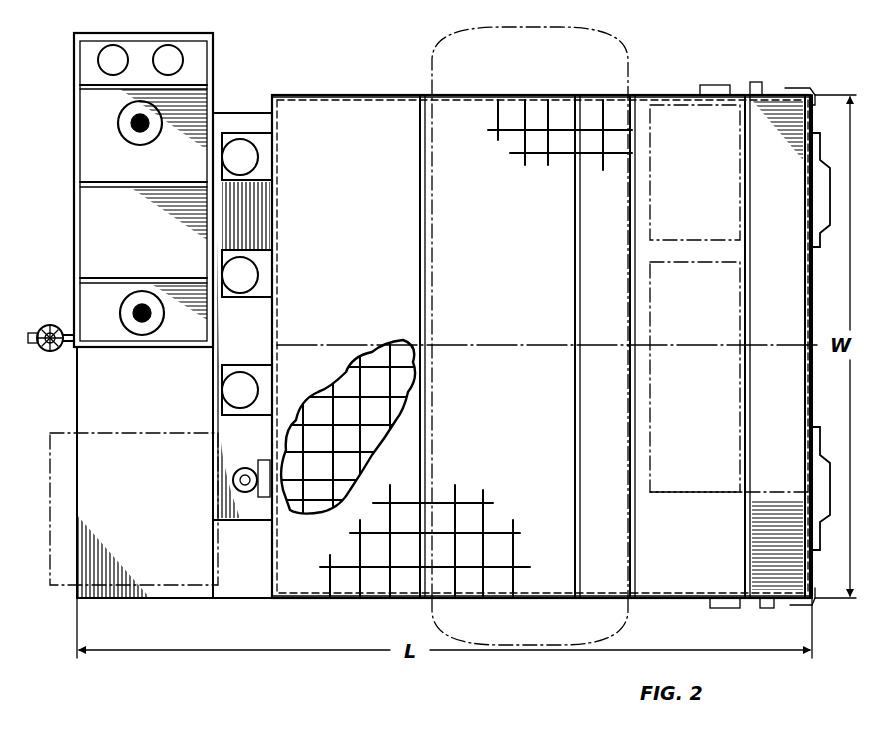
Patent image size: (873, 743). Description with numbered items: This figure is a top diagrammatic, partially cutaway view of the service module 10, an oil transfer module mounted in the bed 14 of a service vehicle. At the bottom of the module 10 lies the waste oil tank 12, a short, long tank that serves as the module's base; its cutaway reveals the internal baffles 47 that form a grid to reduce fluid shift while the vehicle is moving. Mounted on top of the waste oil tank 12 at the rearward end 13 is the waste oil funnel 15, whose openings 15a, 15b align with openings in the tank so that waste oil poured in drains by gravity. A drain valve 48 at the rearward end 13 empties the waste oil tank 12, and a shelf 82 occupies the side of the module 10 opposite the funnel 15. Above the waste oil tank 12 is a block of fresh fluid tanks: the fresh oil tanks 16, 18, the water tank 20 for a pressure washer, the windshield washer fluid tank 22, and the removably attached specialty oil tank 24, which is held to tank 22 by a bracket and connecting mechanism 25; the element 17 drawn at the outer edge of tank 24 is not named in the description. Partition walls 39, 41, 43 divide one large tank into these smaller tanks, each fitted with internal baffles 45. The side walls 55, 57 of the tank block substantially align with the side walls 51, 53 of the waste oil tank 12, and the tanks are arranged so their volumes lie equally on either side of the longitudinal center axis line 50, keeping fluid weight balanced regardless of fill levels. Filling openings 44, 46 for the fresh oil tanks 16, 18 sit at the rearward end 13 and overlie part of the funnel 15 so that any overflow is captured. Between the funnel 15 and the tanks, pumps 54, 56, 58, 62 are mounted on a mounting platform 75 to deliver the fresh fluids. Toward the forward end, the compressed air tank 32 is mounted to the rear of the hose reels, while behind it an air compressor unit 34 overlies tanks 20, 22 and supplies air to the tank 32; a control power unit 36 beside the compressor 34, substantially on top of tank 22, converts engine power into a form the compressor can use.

The service module 10 is at (350, 56).
The waste oil tank 12 is at (406, 406).
The rearward end 13 is at (74, 601).
The bed 14 is at (688, 628).
The waste oil funnel 15 is at (118, 349).
The opening 15a is at (142, 322).
The opening 15b is at (140, 132).
The fresh oil tank 16 is at (348, 270).
The door 17 is at (812, 92).
The fresh oil tank 18 is at (506, 278).
The water tank 20 is at (606, 278).
The windshield washer fluid tank 22 is at (686, 320).
The removably attached tank 24 is at (780, 320).
The bracket and connecting mechanism 25 is at (788, 88).
The compressed air tank 32 is at (553, 28).
The air compressor unit 34 is at (656, 432).
The control power unit 36 is at (652, 180).
The partition wall 39 is at (425, 446).
The partition wall 41 is at (580, 500).
The partition wall 43 is at (653, 494).
The opening 44 is at (113, 47).
The internal baffles 45 is at (525, 160).
The opening 46 is at (168, 47).
The internal baffles 47 is at (385, 370).
The drain valve 48 is at (48, 352).
The longitudinal center axis line 50 is at (488, 345).
The side wall 51 is at (506, 600).
The side wall 53 is at (320, 96).
The pump 54 is at (260, 156).
The side wall 55 is at (541, 616).
The pump 56 is at (260, 282).
The side wall 57 is at (541, 81).
The pump 58 is at (262, 380).
The pump 62 is at (232, 484).
The mounting platform 75 is at (266, 208).
The shelf 82 is at (118, 434).